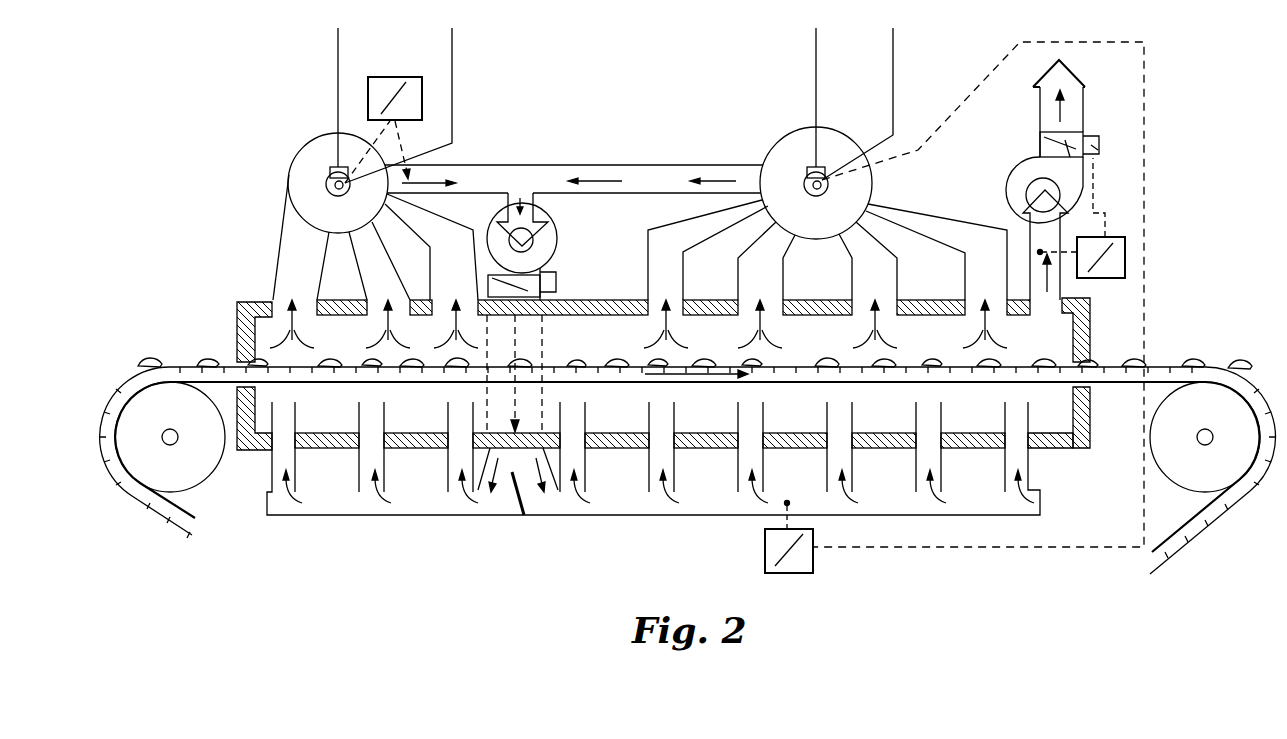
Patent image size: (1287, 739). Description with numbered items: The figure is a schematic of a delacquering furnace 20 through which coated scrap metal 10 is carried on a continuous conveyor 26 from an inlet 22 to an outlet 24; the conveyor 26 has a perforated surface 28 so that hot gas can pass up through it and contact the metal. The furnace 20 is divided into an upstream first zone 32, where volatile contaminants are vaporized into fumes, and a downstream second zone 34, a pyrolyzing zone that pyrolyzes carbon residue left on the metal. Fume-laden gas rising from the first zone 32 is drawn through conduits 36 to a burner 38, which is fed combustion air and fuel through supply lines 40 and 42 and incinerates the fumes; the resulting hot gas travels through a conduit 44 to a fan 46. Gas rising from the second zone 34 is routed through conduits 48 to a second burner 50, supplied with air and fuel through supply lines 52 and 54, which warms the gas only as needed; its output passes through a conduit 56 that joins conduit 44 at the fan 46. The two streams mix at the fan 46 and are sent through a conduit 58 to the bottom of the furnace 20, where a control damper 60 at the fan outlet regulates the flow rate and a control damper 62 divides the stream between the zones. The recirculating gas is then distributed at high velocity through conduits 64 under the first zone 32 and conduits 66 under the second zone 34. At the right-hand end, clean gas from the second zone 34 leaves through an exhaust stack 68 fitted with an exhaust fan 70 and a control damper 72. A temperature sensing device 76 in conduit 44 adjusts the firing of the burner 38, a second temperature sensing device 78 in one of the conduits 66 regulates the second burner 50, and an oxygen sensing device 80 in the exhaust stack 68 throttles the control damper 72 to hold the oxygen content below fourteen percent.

The scrap metal 10 is at (470, 360).
The furnace 20 is at (191, 220).
The inlet 22 is at (237, 346).
The outlet 24 is at (1086, 349).
The continuous conveyor 26 is at (140, 375).
The perforated surface 28 is at (305, 367).
The first zone 32 is at (403, 354).
The second zone 34 is at (878, 357).
The conduits 36 is at (290, 240).
The burner 38 is at (291, 178).
The supply line 40 is at (337, 49).
The supply line 42 is at (452, 49).
The conduit 44 is at (467, 186).
The fan 46 is at (558, 239).
The conduits 48 is at (650, 272).
The second burner 50 is at (790, 135).
The supply line 52 is at (813, 64).
The supply line 54 is at (893, 64).
The conduit 56 is at (704, 166).
The conduit 58 is at (543, 336).
The control damper 60 is at (556, 282).
The control damper 62 is at (512, 500).
The conduits 64 is at (349, 472).
The conduits 66 is at (645, 472).
The exhaust stack 68 is at (1063, 290).
The exhaust fan 70 is at (1006, 181).
The control damper 72 is at (1094, 146).
The temperature sensing device 76 is at (438, 165).
The temperature sensing device 78 is at (790, 504).
The oxygen sensing device 80 is at (1040, 251).